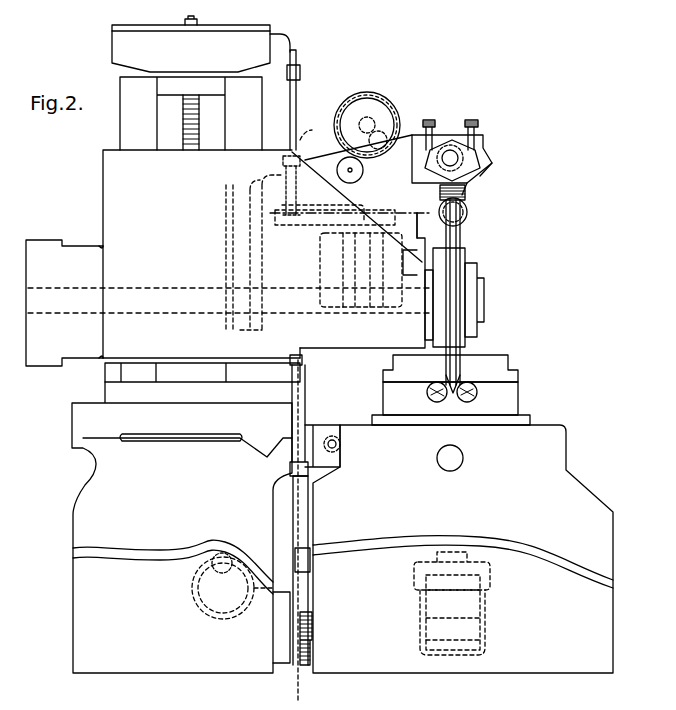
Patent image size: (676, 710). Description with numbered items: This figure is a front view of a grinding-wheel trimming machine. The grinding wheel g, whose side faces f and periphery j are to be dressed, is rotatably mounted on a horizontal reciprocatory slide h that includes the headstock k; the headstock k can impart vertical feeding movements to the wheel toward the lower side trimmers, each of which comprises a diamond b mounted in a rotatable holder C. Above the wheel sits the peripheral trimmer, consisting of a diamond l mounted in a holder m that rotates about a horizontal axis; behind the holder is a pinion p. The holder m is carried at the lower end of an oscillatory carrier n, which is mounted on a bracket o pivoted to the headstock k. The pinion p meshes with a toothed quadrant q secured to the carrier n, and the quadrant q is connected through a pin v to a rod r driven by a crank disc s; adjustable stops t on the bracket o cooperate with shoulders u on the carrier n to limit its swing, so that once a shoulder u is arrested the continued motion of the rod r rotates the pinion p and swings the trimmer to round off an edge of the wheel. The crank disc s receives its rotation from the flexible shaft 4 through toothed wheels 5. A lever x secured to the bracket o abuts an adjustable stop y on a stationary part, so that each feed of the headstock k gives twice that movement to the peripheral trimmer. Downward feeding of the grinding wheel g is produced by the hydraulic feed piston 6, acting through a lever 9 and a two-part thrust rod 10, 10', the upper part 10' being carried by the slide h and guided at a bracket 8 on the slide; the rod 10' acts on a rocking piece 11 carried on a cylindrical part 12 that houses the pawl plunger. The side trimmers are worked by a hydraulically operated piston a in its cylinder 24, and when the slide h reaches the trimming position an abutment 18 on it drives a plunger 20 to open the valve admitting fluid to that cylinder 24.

The cylindrical part 12 is at (283, 44).
The rocking piece 11 is at (300, 64).
The crank disc s is at (370, 110).
The shoulders u is at (425, 121).
The rod r is at (378, 228).
The adjustable stops t is at (434, 126).
The bracket o is at (474, 120).
The flexible shaft 4 is at (323, 140).
The lever x is at (322, 150).
The adjustable stop y is at (282, 163).
The toothed wheels 5 is at (364, 172).
The toothed quadrant q is at (480, 174).
The carrier n is at (464, 188).
The pin v is at (468, 208).
The holder m is at (455, 215).
The feed piston 6 is at (190, 600).
The grinding wheel g is at (488, 255).
The side faces f is at (490, 285).
The diamond l is at (442, 242).
The pinion p is at (443, 222).
The headstock k is at (358, 345).
The bracket 8 is at (304, 362).
The thrust rod part 10' is at (320, 530).
The abutment 18 is at (338, 433).
The plunger 20 is at (338, 449).
The thrust rod 10 is at (320, 570).
The lever 9 is at (312, 628).
The diamond b is at (460, 388).
The rotatable holder C is at (477, 393).
The periphery j is at (455, 395).
The slide h is at (98, 406).
The piston a is at (472, 610).
The cylinder 24 is at (472, 645).